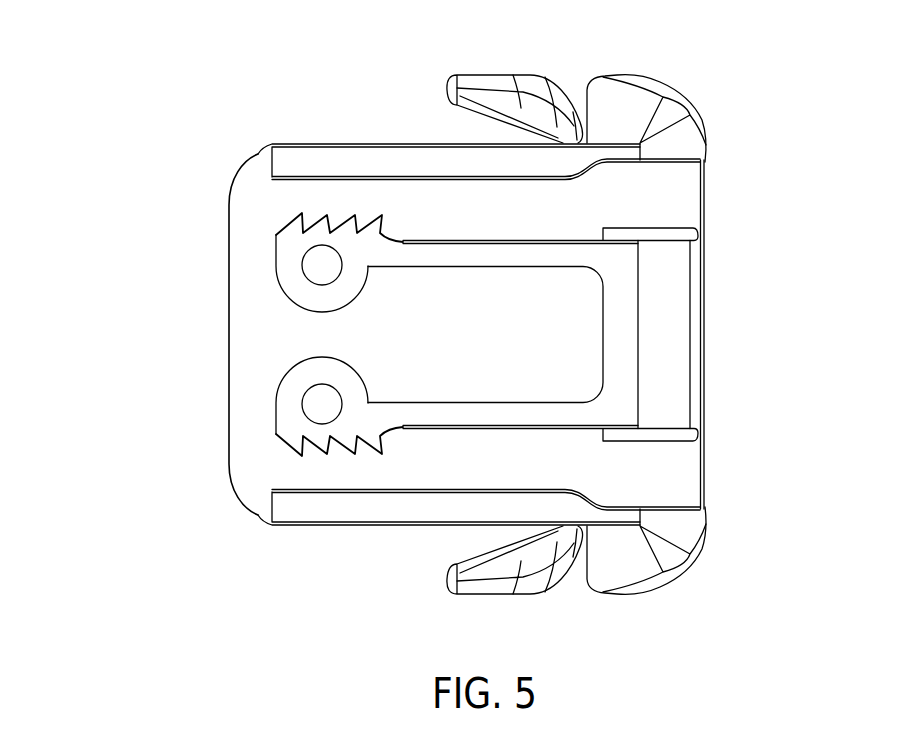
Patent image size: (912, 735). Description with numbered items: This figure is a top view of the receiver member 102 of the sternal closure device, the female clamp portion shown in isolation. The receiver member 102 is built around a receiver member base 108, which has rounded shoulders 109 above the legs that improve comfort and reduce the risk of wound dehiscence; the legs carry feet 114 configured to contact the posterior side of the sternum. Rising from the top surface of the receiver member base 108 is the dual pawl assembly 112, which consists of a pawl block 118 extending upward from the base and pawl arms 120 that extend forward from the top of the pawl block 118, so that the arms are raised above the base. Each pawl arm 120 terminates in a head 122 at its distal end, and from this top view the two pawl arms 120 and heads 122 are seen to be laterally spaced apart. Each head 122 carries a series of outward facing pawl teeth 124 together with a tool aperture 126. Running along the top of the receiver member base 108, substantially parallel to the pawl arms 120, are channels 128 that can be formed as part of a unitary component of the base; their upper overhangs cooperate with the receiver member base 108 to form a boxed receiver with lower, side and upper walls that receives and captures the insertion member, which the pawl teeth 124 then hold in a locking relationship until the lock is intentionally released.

The receiver member 102 is at (772, 211).
The receiver member base 108 is at (250, 337).
The rounded shoulders 109 is at (678, 548).
The dual pawl assembly 112 is at (668, 386).
The feet 114 is at (497, 85).
The pawl block 118 is at (675, 330).
The pawl arms 120 is at (462, 258).
The head 122 is at (293, 262).
The pawl teeth 124 is at (297, 442).
The tool aperture 126 is at (325, 260).
The channels 128 is at (265, 505).